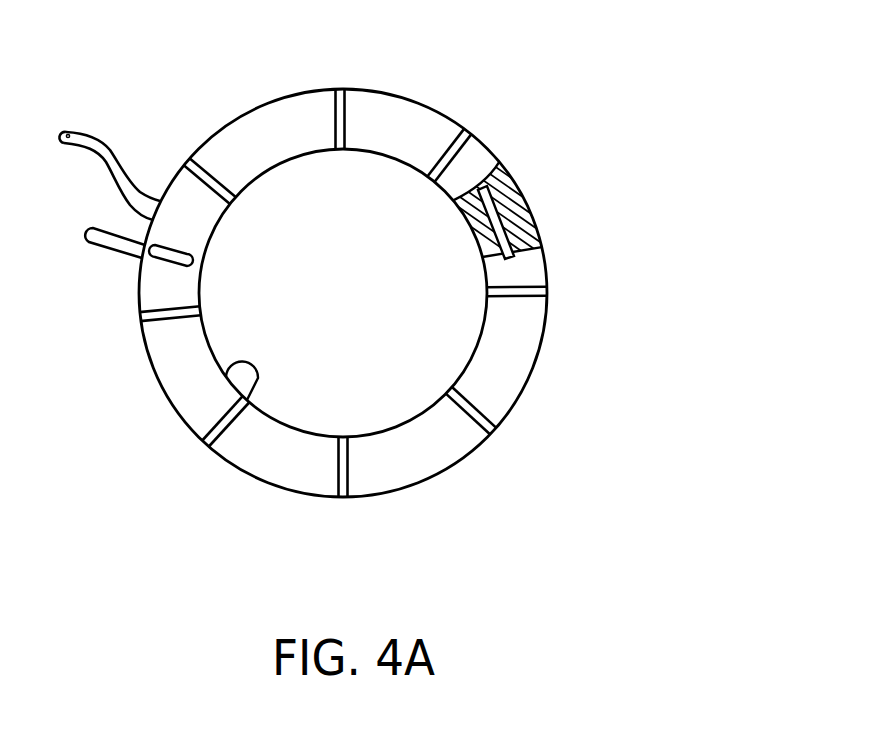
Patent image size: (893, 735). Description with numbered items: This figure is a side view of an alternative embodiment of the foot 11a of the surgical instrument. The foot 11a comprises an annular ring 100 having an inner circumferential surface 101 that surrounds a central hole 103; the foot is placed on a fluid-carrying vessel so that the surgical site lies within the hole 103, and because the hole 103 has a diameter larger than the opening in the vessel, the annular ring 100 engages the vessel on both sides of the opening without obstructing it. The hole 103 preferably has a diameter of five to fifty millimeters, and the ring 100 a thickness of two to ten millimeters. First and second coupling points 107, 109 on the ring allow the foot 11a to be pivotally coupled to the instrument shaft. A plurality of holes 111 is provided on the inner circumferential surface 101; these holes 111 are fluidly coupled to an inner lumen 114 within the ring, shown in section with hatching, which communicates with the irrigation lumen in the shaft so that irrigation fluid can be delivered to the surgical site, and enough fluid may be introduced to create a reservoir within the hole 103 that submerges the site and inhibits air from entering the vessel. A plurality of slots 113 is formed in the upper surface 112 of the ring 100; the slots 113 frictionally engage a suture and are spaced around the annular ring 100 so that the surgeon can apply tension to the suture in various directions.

The annular ring 100 is at (391, 92).
The foot 11a is at (655, 117).
The inner circumferential surface 101 is at (249, 398).
The hole 103 is at (423, 320).
The first coupling point 107 is at (173, 247).
The second coupling point 109 is at (102, 247).
The holes 111 is at (486, 212).
The upper surface 112 is at (287, 470).
The slots 113 is at (490, 435).
The inner lumen 114 is at (533, 223).